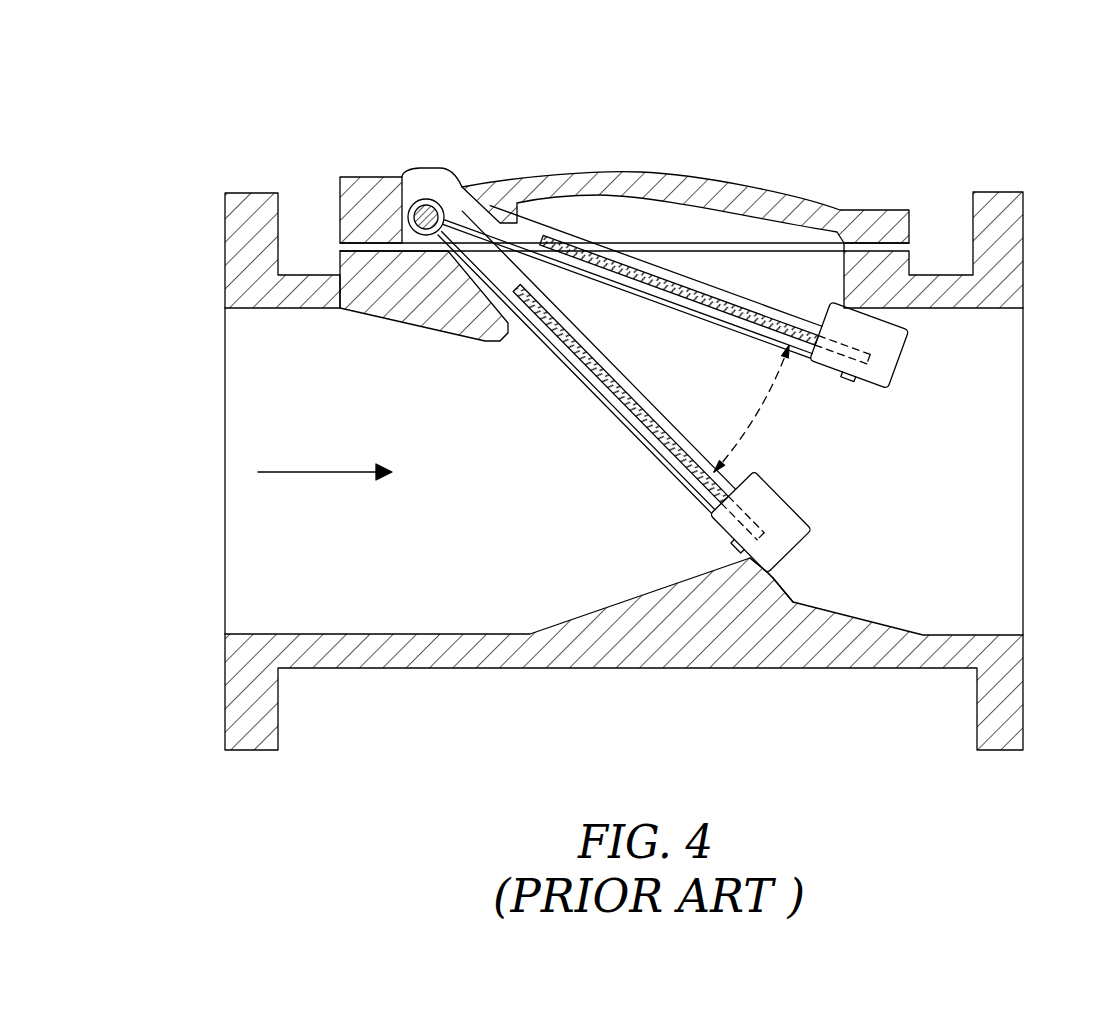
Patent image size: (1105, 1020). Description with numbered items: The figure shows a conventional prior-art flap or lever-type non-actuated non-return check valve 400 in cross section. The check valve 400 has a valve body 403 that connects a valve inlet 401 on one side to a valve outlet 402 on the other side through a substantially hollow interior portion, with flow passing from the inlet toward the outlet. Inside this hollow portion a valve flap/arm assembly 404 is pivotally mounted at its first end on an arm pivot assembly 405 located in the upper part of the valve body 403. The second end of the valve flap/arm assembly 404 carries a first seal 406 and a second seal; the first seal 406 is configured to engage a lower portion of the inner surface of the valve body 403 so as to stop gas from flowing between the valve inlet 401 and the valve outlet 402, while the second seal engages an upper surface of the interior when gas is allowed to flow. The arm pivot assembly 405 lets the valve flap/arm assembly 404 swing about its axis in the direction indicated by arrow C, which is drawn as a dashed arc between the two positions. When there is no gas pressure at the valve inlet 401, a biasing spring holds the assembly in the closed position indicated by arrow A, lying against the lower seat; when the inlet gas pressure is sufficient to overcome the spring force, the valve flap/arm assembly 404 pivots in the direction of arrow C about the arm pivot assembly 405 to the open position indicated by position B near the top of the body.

The check valve 400 is at (627, 399).
The valve inlet 401 is at (285, 437).
The valve outlet 402 is at (990, 440).
The valve body 403 is at (498, 668).
The valve flap/arm assembly 404 is at (710, 375).
The arm pivot assembly 405 is at (427, 204).
The first seal 406 is at (740, 560).
The closed position A is at (669, 388).
The open position B is at (922, 376).
The pivoting direction C is at (751, 409).